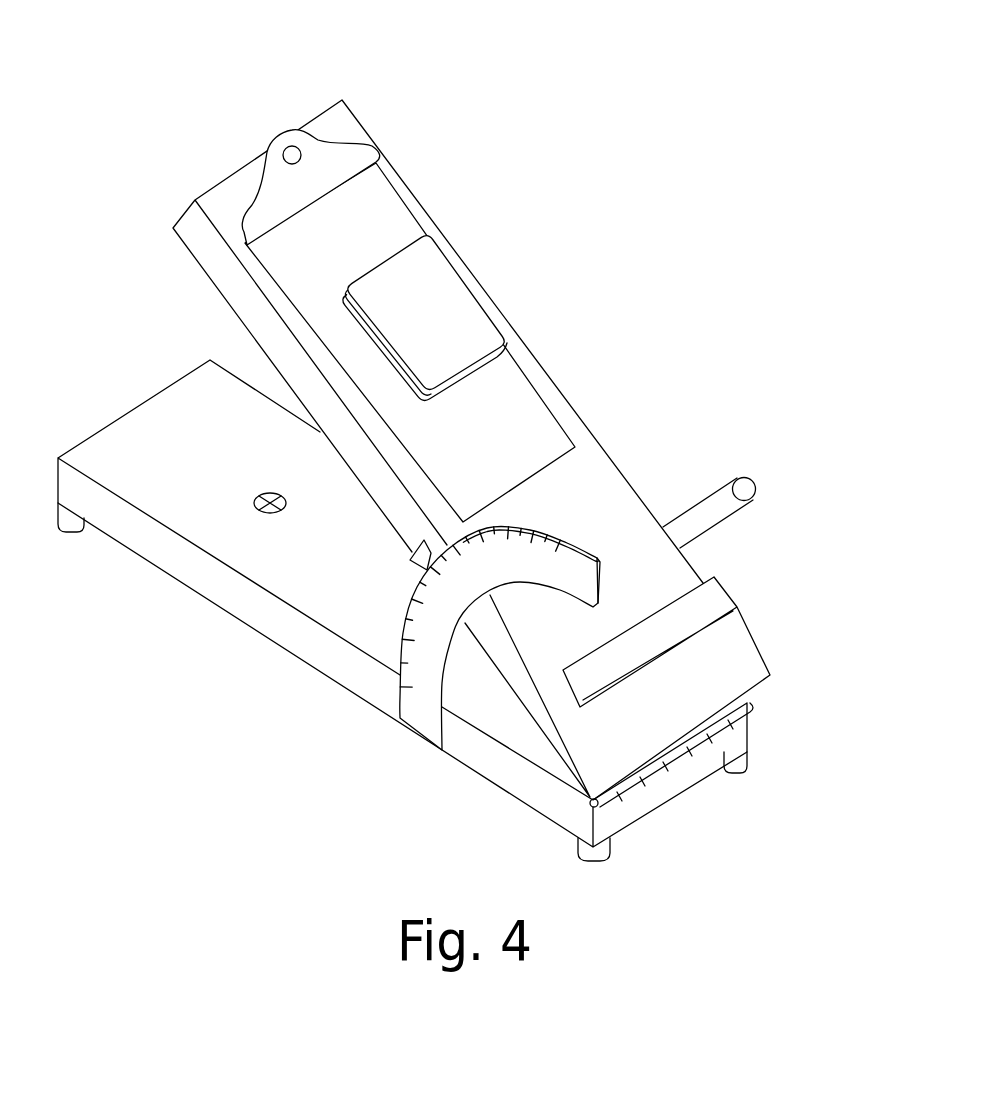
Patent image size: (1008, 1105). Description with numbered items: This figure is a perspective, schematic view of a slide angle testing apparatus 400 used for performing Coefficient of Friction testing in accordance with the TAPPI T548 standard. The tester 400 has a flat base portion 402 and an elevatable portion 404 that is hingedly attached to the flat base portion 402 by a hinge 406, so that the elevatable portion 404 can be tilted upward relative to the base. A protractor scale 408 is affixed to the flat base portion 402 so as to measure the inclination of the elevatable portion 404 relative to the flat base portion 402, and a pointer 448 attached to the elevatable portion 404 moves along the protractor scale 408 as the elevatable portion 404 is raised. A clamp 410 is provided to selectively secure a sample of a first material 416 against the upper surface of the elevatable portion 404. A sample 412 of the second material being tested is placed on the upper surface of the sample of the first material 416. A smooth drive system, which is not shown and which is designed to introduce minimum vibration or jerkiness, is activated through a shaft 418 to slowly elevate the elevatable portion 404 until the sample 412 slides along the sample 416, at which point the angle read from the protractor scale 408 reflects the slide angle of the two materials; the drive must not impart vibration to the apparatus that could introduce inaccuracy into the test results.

The slide angle testing apparatus 400 is at (455, 446).
The flat base portion 402 is at (210, 523).
The elevatable portion 404 is at (417, 190).
The hinge 406 is at (748, 710).
The protractor scale 408 is at (410, 695).
The clamp 410 is at (325, 167).
The sample of the second material 412 is at (448, 303).
The sample of a first material 416 is at (513, 430).
The shaft 418 is at (713, 507).
The pointer 448 is at (412, 557).